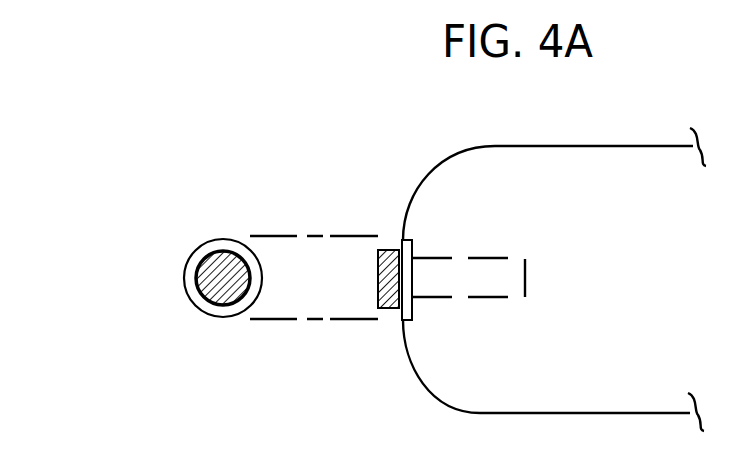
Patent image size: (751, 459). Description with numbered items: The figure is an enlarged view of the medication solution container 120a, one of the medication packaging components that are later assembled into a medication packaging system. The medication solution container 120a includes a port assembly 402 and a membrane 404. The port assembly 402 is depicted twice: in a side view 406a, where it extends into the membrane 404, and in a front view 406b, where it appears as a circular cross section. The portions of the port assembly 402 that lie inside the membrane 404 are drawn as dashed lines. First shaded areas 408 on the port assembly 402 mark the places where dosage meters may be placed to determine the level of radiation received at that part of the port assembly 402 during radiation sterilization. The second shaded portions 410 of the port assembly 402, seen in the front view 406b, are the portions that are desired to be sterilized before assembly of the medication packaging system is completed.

The medication solution container 120a is at (266, 132).
The port assembly 402 is at (378, 282).
The membrane 404 is at (640, 146).
The side view 406a is at (512, 244).
The front view 406b is at (174, 244).
The first shaded areas 408 is at (380, 310).
The second shaded portions 410 is at (216, 302).